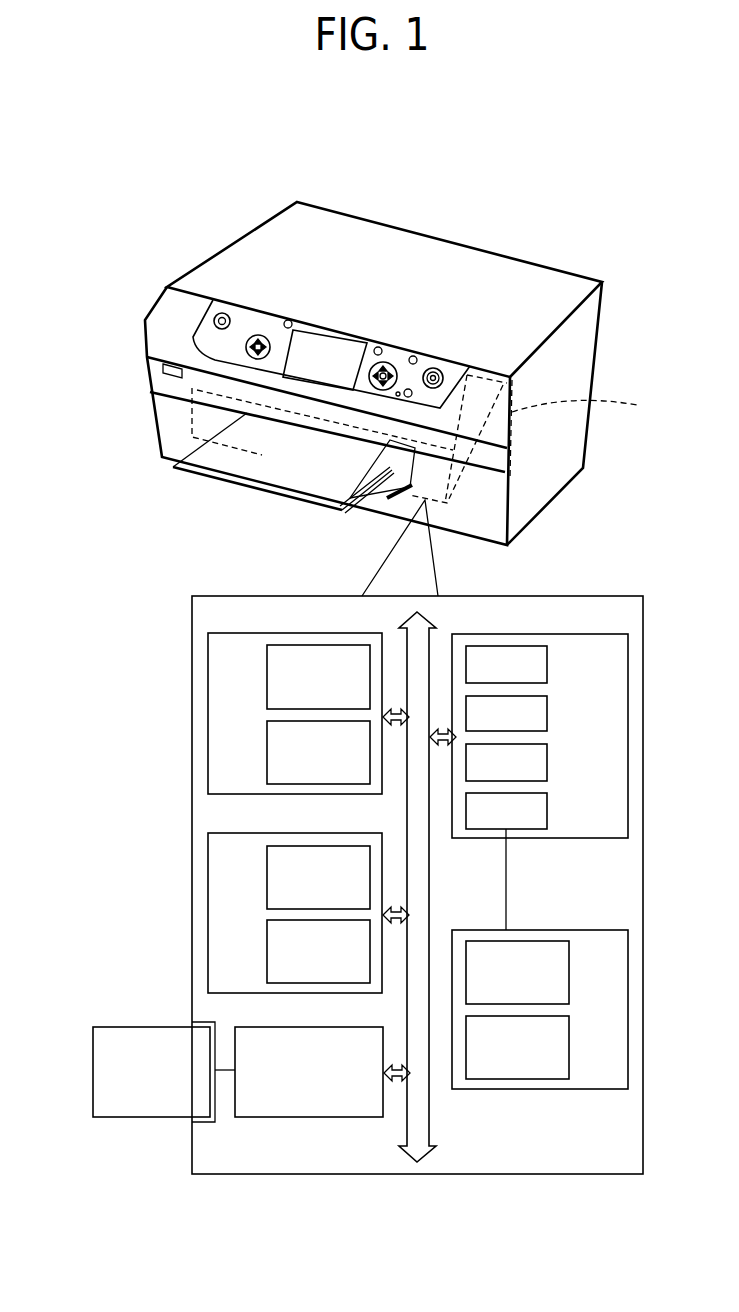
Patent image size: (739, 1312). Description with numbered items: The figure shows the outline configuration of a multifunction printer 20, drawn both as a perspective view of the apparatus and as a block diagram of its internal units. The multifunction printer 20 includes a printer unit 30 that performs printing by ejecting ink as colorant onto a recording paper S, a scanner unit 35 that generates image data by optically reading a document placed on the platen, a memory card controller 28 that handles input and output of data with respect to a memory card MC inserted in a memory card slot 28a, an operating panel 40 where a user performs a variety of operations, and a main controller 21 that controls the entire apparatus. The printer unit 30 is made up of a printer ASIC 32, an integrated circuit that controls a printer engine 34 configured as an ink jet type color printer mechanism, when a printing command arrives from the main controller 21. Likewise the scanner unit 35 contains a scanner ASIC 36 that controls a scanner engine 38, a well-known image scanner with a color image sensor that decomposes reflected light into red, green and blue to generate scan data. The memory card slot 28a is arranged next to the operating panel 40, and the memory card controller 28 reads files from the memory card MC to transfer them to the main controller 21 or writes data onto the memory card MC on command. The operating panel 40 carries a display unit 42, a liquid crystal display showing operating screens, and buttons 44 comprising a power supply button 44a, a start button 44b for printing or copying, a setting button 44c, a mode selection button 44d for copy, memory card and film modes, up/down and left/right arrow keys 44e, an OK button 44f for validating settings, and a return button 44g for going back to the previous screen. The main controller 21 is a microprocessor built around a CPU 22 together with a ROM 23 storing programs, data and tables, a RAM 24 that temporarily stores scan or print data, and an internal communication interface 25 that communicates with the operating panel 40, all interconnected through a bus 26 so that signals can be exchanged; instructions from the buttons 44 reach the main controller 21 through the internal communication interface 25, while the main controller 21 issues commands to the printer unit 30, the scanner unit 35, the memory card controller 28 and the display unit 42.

The multifunction printer 20 is at (566, 192).
The main controller 21 is at (520, 632).
The CPU 22 is at (548, 670).
The ROM 23 is at (548, 720).
The RAM 24 is at (548, 768).
The internal communication interface 25 is at (548, 816).
The bus 26 is at (429, 1143).
The memory card controller 28 is at (320, 1023).
The memory card slot 28a is at (161, 367).
The printer unit 30 is at (292, 624).
The printer ASIC 32 is at (266, 675).
The printer engine 34 is at (266, 751).
The scanner unit 35 is at (320, 833).
The scanner ASIC 36 is at (266, 875).
The scanner engine 38 is at (266, 949).
The operating panel 40 is at (193, 337).
The display unit 42 is at (310, 347).
The buttons 44 is at (570, 1043).
The power supply button 44a is at (218, 313).
The start button 44b is at (443, 375).
The setting button 44c is at (416, 357).
The mode selection button 44d is at (252, 354).
The up/down and left/right arrow keys 44e is at (398, 396).
The OK button 44f is at (390, 366).
The return button 44g is at (412, 396).
The recording paper S is at (272, 468).
The memory card MC is at (165, 1024).